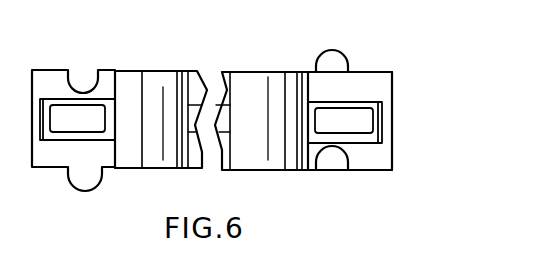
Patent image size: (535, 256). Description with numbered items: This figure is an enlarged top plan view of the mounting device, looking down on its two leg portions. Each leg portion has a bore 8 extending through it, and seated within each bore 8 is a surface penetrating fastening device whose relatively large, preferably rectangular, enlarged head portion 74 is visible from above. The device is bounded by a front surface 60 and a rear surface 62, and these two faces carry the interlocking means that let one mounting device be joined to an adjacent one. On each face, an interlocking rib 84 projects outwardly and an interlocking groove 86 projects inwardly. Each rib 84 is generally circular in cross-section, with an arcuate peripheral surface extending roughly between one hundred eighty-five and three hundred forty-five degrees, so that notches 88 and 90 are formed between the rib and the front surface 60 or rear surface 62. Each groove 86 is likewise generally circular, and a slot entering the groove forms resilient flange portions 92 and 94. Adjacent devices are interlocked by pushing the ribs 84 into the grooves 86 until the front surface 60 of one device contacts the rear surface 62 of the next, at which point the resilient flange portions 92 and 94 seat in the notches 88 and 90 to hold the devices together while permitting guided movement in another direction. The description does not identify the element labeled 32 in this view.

The bore 8 is at (42, 102).
The housing body 32 is at (392, 151).
The front surface 60 is at (152, 163).
The rear surface 62 is at (160, 72).
The enlarged head portion 74 is at (58, 120).
The interlocking rib 84 is at (84, 182).
The interlocking groove 86 is at (84, 80).
The notch 88 is at (66, 172).
The notch 90 is at (102, 174).
The resilient flange portion 92 is at (68, 68).
The resilient flange portion 94 is at (100, 67).